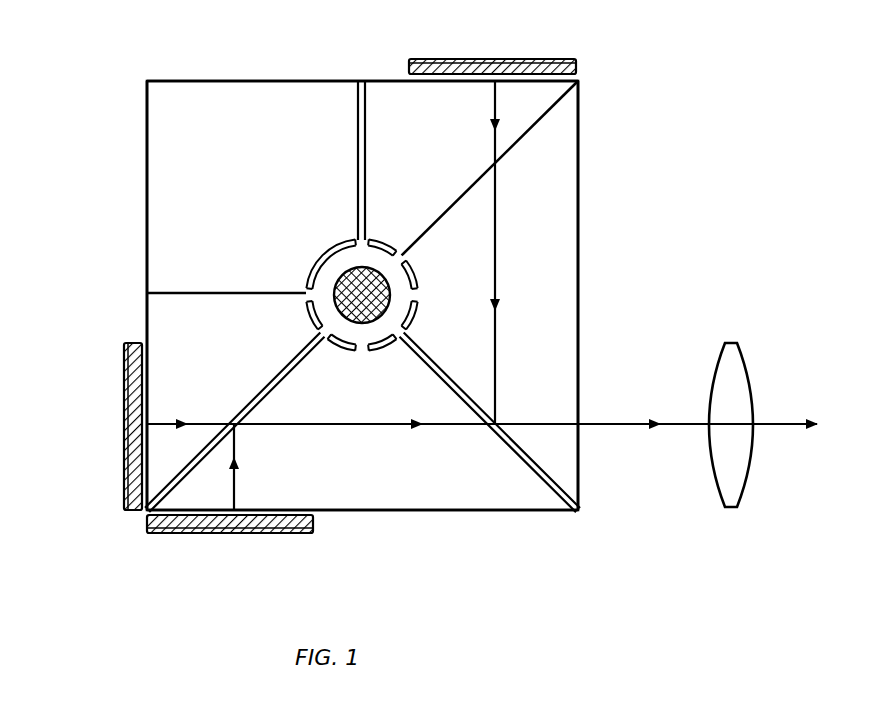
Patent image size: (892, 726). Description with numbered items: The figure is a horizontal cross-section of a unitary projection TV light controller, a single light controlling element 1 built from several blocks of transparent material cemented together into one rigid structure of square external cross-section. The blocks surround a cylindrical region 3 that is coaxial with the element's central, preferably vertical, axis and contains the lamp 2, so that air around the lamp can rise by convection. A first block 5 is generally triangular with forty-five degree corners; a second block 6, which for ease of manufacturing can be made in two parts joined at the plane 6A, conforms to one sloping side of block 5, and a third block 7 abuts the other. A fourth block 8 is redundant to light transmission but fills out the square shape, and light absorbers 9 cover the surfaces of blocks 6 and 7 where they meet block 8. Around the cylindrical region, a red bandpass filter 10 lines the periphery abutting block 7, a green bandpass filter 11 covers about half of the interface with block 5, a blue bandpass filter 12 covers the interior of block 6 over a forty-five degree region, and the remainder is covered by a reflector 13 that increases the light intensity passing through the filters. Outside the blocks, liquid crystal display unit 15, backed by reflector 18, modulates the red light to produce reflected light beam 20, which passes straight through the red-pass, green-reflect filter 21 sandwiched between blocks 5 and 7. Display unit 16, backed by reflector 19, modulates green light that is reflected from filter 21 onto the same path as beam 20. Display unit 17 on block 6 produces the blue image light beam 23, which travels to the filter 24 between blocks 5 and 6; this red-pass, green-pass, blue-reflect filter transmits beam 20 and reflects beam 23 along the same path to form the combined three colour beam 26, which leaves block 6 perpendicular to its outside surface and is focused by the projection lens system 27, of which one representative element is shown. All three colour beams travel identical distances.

The light controlling element 1 is at (620, 186).
The lamp 2 is at (350, 268).
The cylindrical region 3 is at (400, 303).
The first block 5 is at (506, 500).
The second block 6 is at (578, 248).
The plane 6A is at (527, 130).
The third block 7 is at (175, 327).
The fourth block 8 is at (270, 90).
The light absorbers 9 is at (360, 162).
The red bandpass filter 10 is at (316, 318).
The green bandpass filter 11 is at (343, 347).
The blue bandpass filter 12 is at (389, 247).
The reflector 13 is at (312, 275).
The display unit 15 is at (135, 510).
The display unit 16 is at (313, 523).
The display unit 17 is at (409, 72).
The reflector 18 is at (124, 385).
The reflector 19 is at (205, 540).
The light beam 20 is at (566, 58).
The filter 21 is at (262, 407).
The blue image light beam 23 is at (492, 150).
The filter 24 is at (545, 455).
The combined three colour beam 26 is at (535, 424).
The projection lens system 27 is at (725, 368).